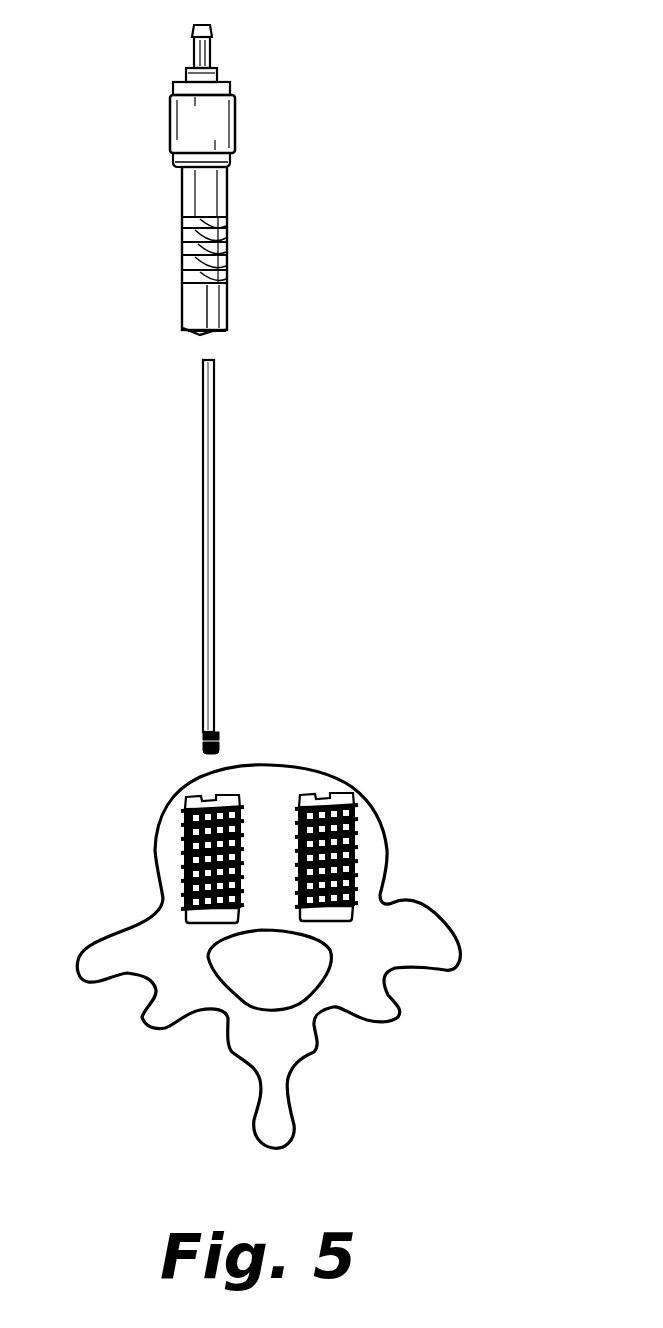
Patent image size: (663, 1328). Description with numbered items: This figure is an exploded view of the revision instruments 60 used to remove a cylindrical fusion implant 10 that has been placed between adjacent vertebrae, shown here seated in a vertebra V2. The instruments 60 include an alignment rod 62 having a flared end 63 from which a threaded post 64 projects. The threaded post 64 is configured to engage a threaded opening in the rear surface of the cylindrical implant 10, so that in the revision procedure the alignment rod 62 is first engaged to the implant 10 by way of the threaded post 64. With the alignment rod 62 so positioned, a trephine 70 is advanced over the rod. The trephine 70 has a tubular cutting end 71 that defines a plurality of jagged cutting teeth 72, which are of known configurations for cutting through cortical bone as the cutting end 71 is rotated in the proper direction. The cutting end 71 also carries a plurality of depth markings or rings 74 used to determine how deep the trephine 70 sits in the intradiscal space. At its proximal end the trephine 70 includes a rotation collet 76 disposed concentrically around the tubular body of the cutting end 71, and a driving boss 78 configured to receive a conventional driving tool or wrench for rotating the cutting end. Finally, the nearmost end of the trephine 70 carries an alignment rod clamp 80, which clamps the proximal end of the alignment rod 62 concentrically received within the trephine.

The cylindrical fusion implant 10 is at (172, 859).
The revision instruments 60 is at (237, 293).
The alignment rod 62 is at (224, 553).
The flared end 63 is at (218, 729).
The threaded post 64 is at (202, 748).
The trephine 70 is at (174, 197).
The tubular cutting end 71 is at (182, 305).
The cutting teeth 72 is at (203, 333).
The depth markings or rings 74 is at (227, 283).
The rotation collet 76 is at (235, 147).
The driving boss 78 is at (186, 75).
The alignment rod clamp 80 is at (212, 48).
The vertebra V2 is at (371, 930).